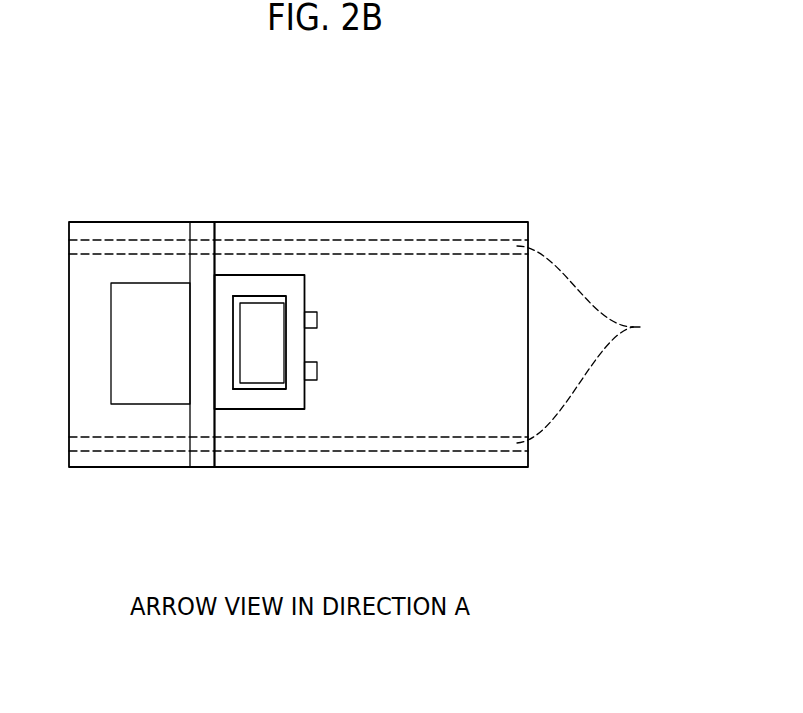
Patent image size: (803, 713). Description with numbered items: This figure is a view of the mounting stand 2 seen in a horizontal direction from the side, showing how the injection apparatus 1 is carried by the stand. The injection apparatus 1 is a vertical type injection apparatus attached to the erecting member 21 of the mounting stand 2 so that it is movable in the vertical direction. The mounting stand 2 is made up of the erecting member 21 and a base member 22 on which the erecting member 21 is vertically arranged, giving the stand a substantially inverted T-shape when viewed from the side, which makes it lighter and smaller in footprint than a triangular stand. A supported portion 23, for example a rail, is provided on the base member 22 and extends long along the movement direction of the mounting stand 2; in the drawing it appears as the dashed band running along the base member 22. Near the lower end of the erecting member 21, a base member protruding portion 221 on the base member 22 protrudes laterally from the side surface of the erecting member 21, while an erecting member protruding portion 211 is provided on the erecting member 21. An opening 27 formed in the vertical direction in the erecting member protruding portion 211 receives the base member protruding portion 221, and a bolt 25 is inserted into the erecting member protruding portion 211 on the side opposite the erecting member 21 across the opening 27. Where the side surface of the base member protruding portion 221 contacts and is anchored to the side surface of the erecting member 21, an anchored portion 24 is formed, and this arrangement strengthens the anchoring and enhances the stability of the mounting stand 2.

The injection apparatus 1 is at (121, 286).
The mounting stand 2 is at (385, 213).
The erecting member 21 is at (207, 275).
The base member 22 is at (472, 222).
The supported portion 23 is at (594, 344).
The anchored portion 24 is at (287, 366).
The bolt 25 is at (311, 317).
The opening 27 is at (233, 363).
The erecting member protruding portion 211 is at (282, 288).
The base member protruding portion 221 is at (249, 320).